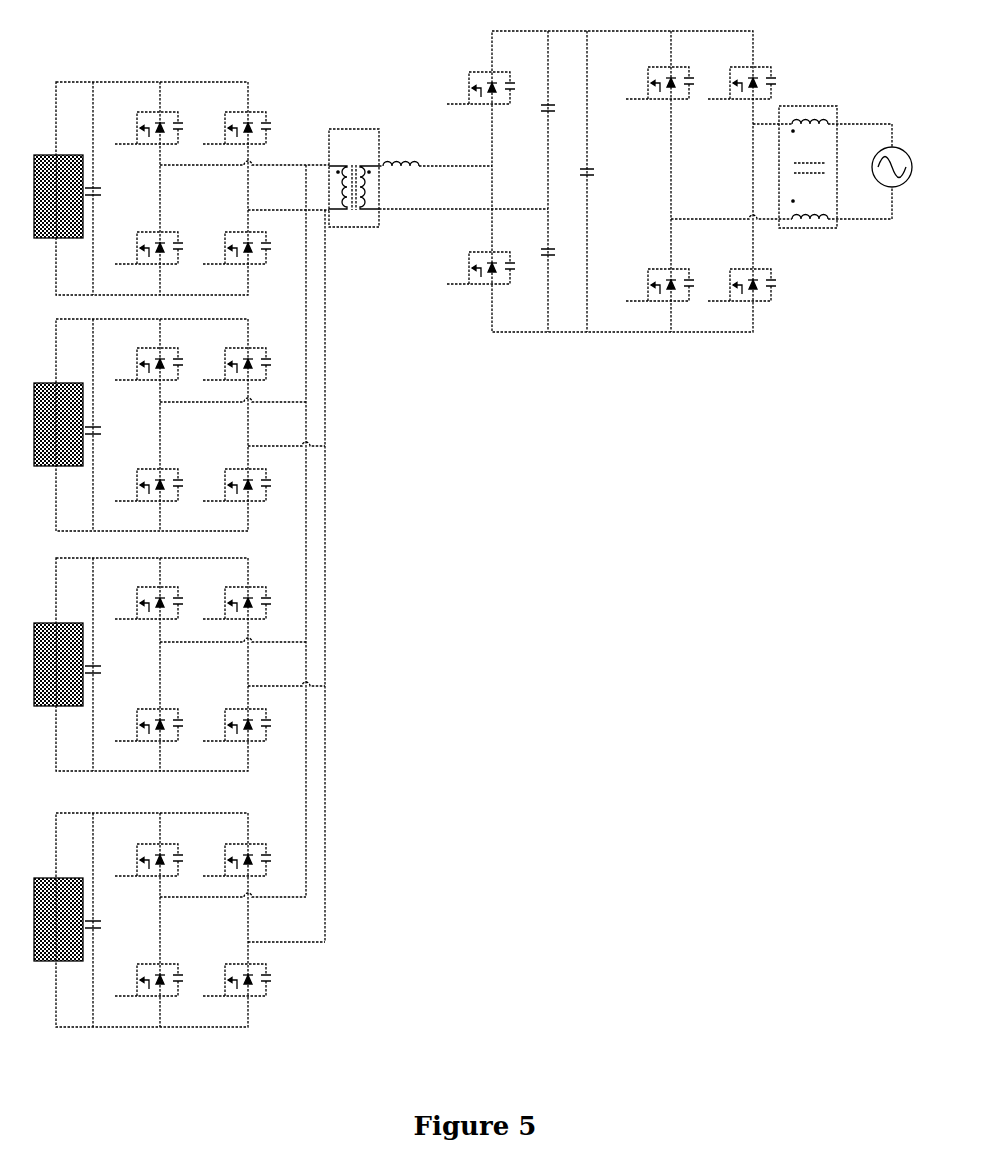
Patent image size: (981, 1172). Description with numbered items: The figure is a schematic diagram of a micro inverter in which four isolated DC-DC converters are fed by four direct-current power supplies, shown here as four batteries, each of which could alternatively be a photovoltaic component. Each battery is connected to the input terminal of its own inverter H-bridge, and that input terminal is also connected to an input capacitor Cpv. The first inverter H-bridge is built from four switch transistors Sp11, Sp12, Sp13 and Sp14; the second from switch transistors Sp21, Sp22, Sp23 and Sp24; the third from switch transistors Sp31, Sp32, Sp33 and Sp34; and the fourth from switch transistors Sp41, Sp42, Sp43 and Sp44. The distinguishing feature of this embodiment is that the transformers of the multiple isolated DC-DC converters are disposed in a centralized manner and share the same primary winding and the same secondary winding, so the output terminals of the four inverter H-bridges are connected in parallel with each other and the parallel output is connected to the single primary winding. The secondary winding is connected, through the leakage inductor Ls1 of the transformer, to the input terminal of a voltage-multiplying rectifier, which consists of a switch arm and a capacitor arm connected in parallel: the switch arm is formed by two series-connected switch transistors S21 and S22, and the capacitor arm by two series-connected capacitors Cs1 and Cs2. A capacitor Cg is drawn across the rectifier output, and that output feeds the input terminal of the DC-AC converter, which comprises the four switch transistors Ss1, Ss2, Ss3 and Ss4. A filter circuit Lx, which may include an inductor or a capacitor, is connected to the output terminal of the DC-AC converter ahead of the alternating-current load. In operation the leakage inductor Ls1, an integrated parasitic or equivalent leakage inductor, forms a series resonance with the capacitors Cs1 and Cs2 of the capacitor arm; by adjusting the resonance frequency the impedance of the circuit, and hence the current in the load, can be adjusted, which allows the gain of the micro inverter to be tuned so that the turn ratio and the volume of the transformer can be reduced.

The input capacitor Cpv is at (103, 550).
The switch transistor Sp11 is at (141, 128).
The switch transistor Sp12 is at (141, 248).
The switch transistor Sp13 is at (230, 128).
The switch transistor Sp14 is at (230, 248).
The switch transistor Sp21 is at (141, 364).
The switch transistor Sp22 is at (141, 485).
The switch transistor Sp23 is at (230, 364).
The switch transistor Sp24 is at (230, 485).
The switch transistor Sp31 is at (141, 603).
The switch transistor Sp32 is at (141, 725).
The switch transistor Sp33 is at (230, 603).
The switch transistor Sp34 is at (230, 725).
The switch transistor Sp41 is at (141, 860).
The switch transistor Sp42 is at (141, 980).
The switch transistor Sp43 is at (230, 860).
The switch transistor Sp44 is at (230, 980).
The leakage inductor Ls1 is at (403, 153).
The switch transistor S21 is at (481, 74).
The switch transistor S22 is at (481, 255).
The capacitor Cs1 is at (561, 112).
The capacitor Cs2 is at (561, 254).
The DC-link capacitor Cg is at (598, 176).
The switch transistor Ss1 is at (660, 70).
The switch transistor Ss2 is at (660, 271).
The switch transistor Ss3 is at (742, 70).
The switch transistor Ss4 is at (742, 271).
The filter circuit Lx is at (808, 182).